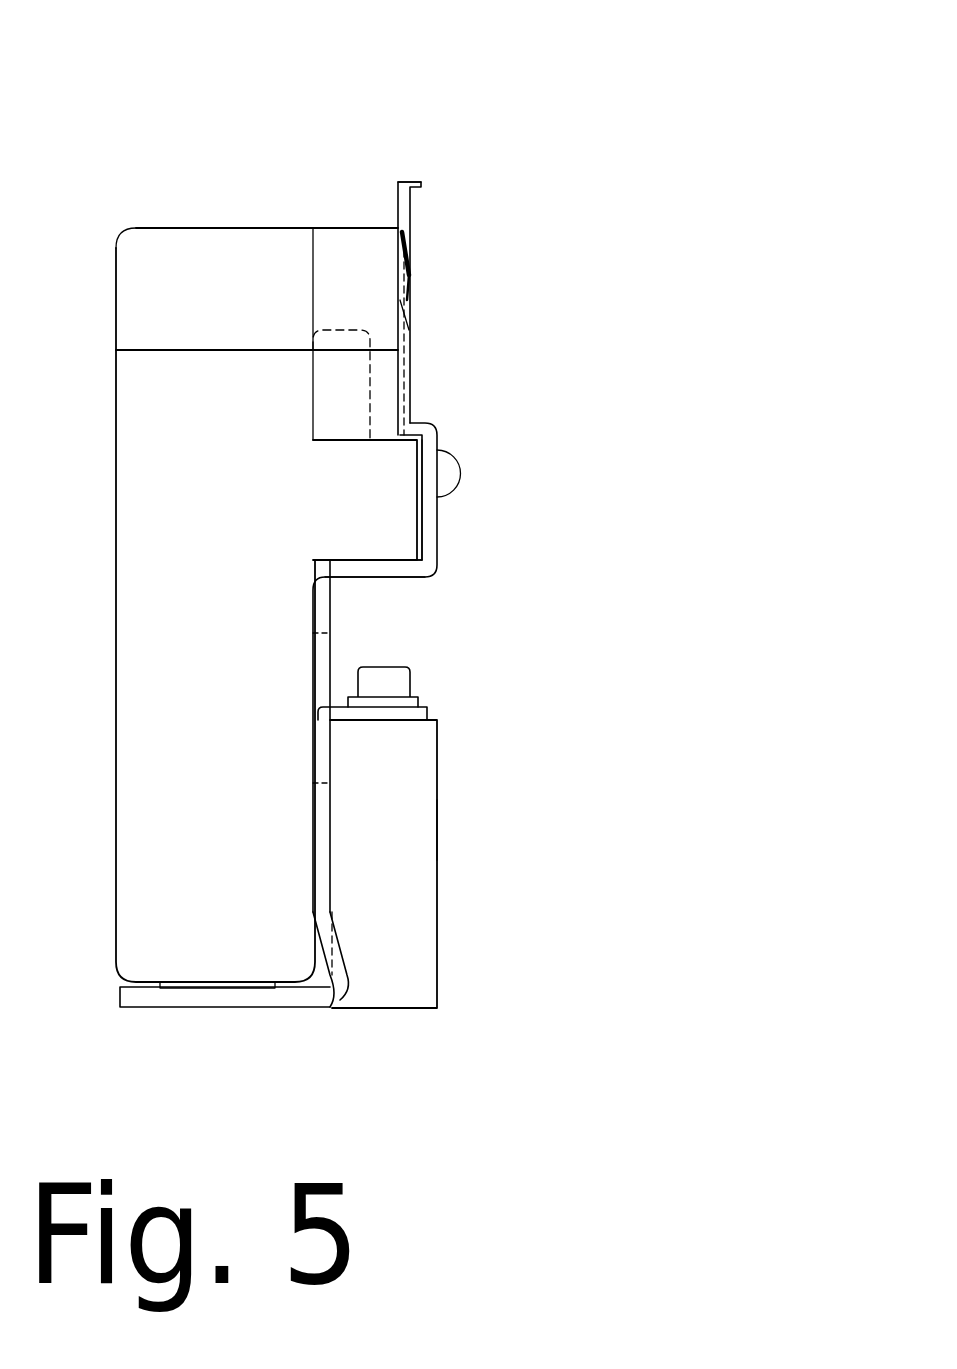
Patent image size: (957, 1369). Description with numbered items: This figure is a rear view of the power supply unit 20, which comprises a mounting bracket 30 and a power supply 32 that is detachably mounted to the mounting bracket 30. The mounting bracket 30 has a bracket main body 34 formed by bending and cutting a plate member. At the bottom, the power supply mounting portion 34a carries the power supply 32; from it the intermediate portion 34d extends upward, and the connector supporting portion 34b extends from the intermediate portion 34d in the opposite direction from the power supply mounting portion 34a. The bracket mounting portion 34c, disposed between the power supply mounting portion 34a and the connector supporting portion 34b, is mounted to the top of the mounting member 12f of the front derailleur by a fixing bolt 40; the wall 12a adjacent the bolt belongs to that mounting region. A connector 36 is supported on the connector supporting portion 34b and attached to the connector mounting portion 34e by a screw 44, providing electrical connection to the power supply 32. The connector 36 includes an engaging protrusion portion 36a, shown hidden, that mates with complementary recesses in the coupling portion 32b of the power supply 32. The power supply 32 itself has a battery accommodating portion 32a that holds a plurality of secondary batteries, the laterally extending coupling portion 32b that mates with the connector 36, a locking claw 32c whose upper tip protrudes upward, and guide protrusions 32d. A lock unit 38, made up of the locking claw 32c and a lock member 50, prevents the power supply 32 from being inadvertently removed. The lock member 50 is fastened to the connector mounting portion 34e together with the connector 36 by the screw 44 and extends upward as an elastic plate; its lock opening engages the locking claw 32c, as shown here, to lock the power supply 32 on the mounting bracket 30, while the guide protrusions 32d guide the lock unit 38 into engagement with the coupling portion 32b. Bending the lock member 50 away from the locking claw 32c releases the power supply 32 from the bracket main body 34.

The power supply unit 20 is at (363, 90).
The power supply 32 is at (211, 170).
The battery accommodating portion 32a is at (155, 248).
The coupling portion 32b is at (350, 247).
The locking claw 32c is at (412, 260).
The guide protrusions 32d is at (410, 315).
The lock member 50 is at (400, 185).
The lock unit 38 is at (413, 208).
The engaging protrusion portion 36a is at (370, 377).
The connector 36 is at (407, 540).
The screw 44 is at (440, 460).
The bracket main body 34 is at (305, 1012).
The connector mounting portion 34e is at (437, 520).
The connector supporting portion 34b is at (401, 572).
The bracket mounting portion 34c is at (420, 710).
The intermediate portion 34d is at (330, 883).
The power supply mounting portion 34a is at (220, 1000).
The mounting bracket 30 is at (145, 1012).
The fixing bolt 40 is at (410, 672).
The frame wall 12a is at (420, 770).
The mounting member 12f is at (470, 832).